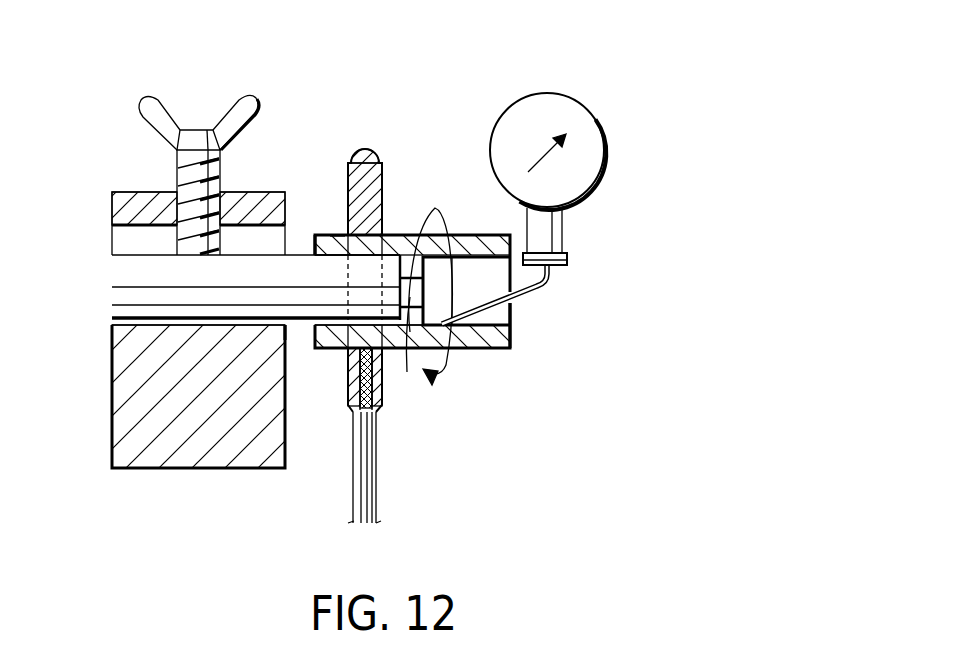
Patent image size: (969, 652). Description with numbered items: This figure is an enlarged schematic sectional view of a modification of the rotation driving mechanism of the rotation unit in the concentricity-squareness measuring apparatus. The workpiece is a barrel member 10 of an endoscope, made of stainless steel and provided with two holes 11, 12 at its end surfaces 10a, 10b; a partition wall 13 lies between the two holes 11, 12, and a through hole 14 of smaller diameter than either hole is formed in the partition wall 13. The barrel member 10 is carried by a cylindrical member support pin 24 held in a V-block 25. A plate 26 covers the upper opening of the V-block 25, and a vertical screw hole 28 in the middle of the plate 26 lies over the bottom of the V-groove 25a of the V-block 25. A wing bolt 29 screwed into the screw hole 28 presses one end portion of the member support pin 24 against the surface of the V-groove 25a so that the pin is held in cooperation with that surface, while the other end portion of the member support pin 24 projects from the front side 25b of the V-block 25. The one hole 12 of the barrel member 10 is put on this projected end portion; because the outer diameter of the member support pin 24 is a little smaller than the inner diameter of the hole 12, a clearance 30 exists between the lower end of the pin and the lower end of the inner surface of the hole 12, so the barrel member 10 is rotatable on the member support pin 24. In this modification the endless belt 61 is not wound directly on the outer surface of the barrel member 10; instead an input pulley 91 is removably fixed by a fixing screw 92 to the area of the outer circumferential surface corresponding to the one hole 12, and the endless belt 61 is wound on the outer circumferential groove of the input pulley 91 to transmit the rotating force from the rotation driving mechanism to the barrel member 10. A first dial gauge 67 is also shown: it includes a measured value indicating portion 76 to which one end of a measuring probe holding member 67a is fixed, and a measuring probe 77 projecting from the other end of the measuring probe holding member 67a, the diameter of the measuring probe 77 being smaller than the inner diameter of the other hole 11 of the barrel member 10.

The barrel member 10 is at (470, 237).
The end surface 10a is at (512, 322).
The end surface 10b is at (316, 243).
The hole 11 is at (478, 286).
The hole 12 is at (338, 236).
The partition wall 13 is at (408, 278).
The through hole 14 is at (422, 308).
The member support pin 24 is at (133, 270).
The V-block 25 is at (130, 368).
The V-groove 25a is at (192, 313).
The front side 25b is at (302, 327).
The plate 26 is at (112, 205).
The screw hole 28 is at (189, 193).
The wing bolt 29 is at (160, 109).
The clearance 30 is at (336, 347).
The endless belt 61 is at (377, 468).
The first dial gauge 67 is at (581, 134).
The measuring probe holding member 67a is at (542, 229).
The measured value indicating portion 76 is at (600, 128).
The measuring probe 77 is at (518, 299).
The input pulley 91 is at (383, 199).
The fixing screw 92 is at (380, 414).